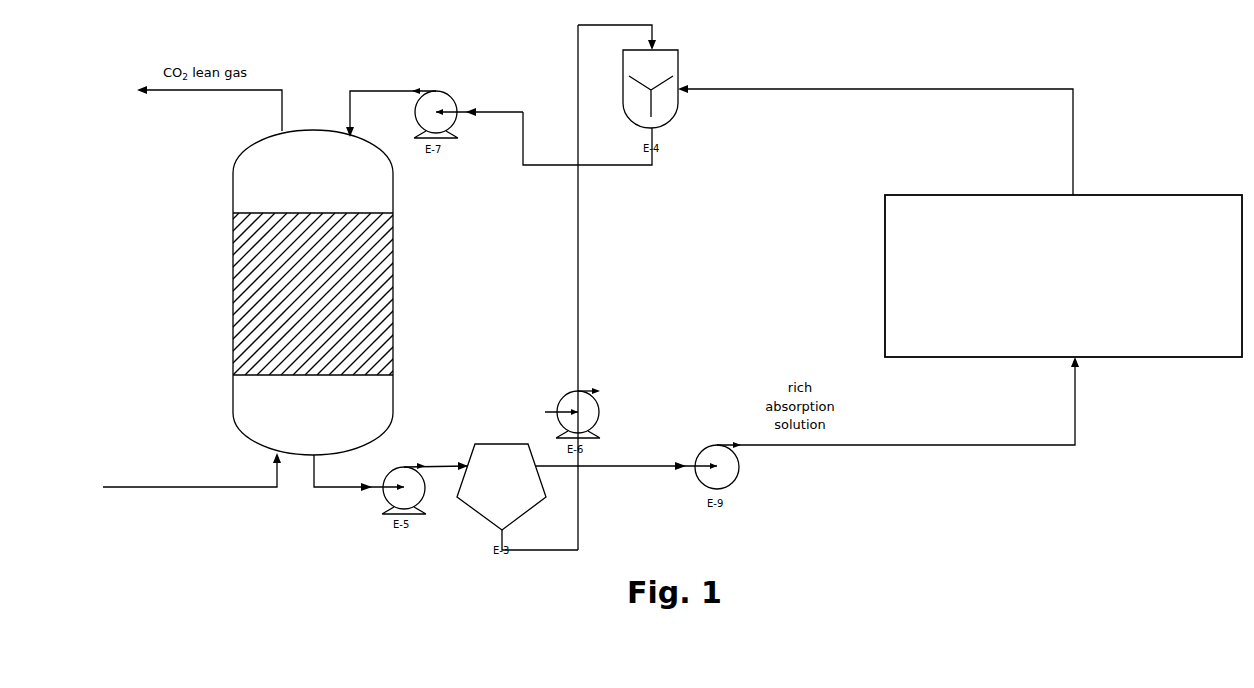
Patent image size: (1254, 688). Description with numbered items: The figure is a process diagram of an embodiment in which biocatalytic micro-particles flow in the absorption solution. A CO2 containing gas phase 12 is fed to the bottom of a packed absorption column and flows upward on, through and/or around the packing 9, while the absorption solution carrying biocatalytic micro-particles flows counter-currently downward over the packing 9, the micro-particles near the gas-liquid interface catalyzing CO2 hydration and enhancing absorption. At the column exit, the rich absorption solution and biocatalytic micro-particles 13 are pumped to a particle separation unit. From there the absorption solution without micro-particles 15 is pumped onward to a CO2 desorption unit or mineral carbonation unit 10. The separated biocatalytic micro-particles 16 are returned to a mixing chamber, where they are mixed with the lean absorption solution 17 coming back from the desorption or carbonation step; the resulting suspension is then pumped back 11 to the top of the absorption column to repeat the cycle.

The packing 9 is at (314, 292).
The CO2 desorption unit or mineral carbonation unit 10 is at (1063, 276).
The lean absorption solution line to absorption column 11 is at (577, 124).
The CO2 containing gas phase 12 is at (192, 486).
The rich absorption solution and biocatalytic micro-particles 13 is at (354, 492).
The absorption solution without micro-particles 15 is at (626, 453).
The biocatalytic micro-particles 16 is at (574, 288).
The lean absorption solution 17 is at (875, 113).